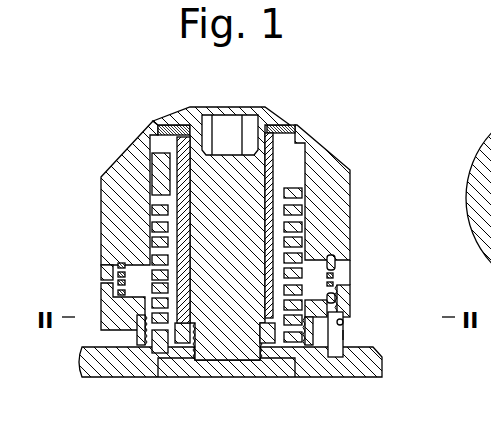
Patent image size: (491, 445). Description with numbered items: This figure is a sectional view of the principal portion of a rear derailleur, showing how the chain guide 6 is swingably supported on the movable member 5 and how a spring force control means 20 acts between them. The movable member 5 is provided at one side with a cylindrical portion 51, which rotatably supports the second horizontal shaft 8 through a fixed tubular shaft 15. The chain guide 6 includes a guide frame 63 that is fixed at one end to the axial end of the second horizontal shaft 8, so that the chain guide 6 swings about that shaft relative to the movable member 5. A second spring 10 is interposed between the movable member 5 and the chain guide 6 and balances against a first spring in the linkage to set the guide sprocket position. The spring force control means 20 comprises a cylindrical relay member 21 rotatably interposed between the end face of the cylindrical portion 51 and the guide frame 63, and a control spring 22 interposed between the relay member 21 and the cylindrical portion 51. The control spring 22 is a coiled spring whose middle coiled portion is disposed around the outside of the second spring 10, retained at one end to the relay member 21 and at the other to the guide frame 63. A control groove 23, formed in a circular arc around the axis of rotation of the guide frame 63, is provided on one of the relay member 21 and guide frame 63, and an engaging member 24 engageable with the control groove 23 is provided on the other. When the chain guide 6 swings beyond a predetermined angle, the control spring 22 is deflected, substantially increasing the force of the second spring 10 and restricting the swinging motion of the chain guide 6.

The movable member 5 is at (123, 157).
The cylindrical portion 51 is at (101, 237).
The second horizontal shaft 8 is at (268, 150).
The second spring 10 is at (302, 244).
The fixed tubular shaft 15 is at (277, 212).
The control spring 22 is at (337, 273).
The relay member 21 is at (350, 296).
The control groove 23 is at (346, 323).
The engaging member 24 is at (346, 336).
The spring force control means 20 is at (348, 345).
The guide frame 63 is at (297, 378).
The chain guide 6 is at (323, 378).